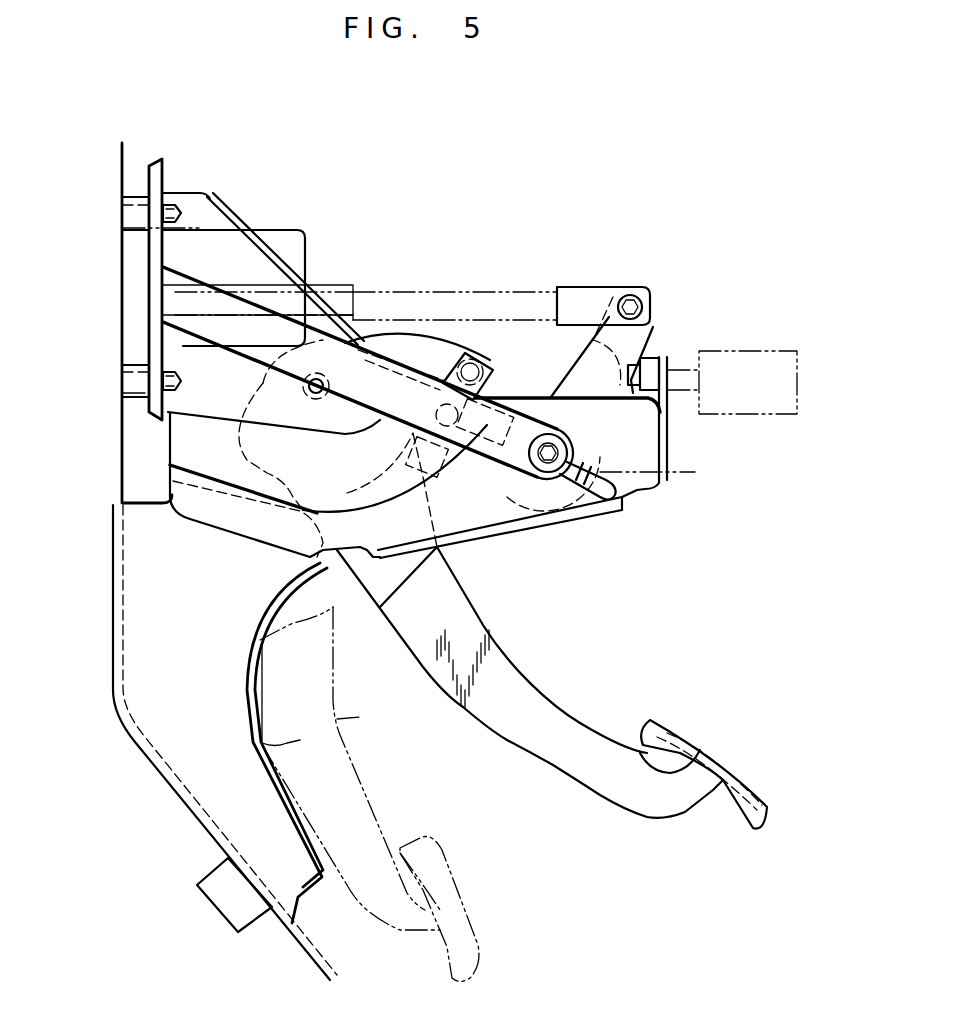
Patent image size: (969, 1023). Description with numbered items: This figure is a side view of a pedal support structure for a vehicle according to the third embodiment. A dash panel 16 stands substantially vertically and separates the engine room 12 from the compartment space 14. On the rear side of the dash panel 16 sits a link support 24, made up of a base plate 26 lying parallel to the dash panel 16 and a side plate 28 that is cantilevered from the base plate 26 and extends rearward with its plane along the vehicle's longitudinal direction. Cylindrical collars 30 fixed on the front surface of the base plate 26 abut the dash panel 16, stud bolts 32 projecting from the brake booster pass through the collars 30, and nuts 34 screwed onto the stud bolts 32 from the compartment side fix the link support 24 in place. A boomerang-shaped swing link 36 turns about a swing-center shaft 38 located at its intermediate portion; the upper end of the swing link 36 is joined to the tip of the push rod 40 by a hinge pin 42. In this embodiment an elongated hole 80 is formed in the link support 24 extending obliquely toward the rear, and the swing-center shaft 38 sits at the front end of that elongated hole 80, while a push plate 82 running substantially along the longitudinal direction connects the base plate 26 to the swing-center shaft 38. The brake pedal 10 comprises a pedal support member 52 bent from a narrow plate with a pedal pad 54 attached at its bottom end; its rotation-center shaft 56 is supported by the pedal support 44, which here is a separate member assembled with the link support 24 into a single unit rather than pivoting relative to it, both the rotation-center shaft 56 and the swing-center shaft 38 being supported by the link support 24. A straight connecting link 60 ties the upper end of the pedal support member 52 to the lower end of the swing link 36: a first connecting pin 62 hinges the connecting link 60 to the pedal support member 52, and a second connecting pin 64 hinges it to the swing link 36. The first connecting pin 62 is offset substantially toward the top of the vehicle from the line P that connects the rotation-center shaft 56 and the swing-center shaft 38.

The brake pedal 10 is at (565, 700).
The engine room 12 is at (164, 946).
The compartment space 14 is at (556, 950).
The dash panel 16 is at (120, 462).
The link support 24 is at (247, 230).
The base plate 26 is at (148, 168).
The side plate 28 is at (478, 510).
The cylindrical collars 30 is at (138, 232).
The stud bolts 32 is at (183, 210).
The nuts 34 is at (174, 200).
The swing link 36 is at (556, 382).
The swing-center shaft 38 is at (594, 434).
The push rod 40 is at (448, 284).
The hinge pin 42 is at (650, 305).
The pedal support 44 is at (336, 735).
The pedal support member 52 is at (467, 630).
The pedal pad 54 is at (710, 760).
The rotation-center shaft 56 is at (300, 385).
The connecting link 60 is at (400, 484).
The first connecting pin 62 is at (473, 353).
The second connecting pin 64 is at (425, 418).
The elongated hole 80 is at (650, 490).
The push plate 82 is at (402, 358).
The line P is at (657, 477).